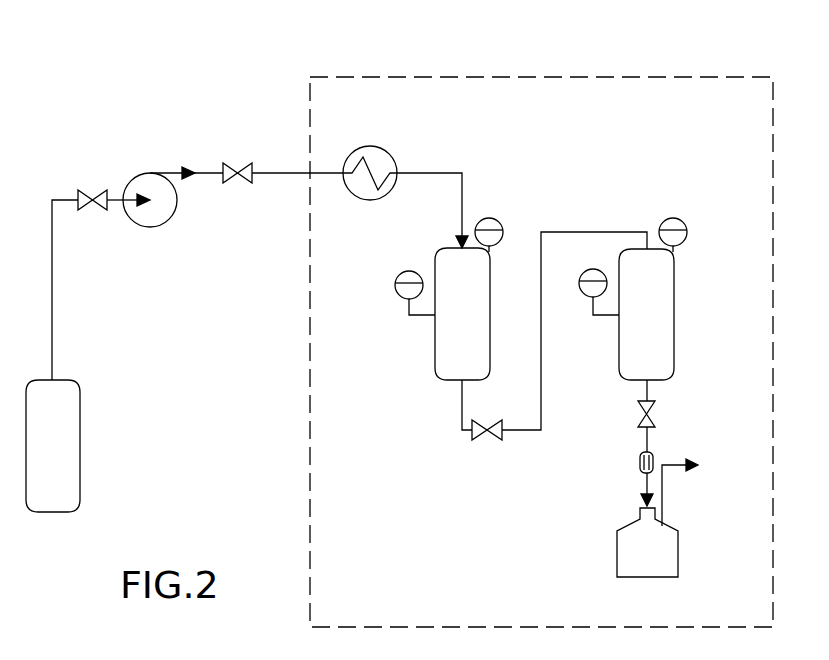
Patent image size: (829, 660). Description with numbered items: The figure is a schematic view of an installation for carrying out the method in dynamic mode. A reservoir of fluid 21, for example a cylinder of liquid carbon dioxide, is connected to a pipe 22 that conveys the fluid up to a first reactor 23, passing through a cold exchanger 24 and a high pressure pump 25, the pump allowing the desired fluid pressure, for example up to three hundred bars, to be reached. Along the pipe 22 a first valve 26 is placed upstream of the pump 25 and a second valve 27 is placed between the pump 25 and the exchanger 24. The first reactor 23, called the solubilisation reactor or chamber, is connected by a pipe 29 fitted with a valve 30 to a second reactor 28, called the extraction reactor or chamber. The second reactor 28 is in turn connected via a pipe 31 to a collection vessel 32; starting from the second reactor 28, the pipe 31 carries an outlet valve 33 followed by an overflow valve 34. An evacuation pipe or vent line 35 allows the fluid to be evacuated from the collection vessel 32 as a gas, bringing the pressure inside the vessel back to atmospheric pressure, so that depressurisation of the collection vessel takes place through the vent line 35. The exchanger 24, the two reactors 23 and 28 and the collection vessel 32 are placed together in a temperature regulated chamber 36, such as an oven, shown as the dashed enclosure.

The reservoir of fluid 21 is at (72, 437).
The pipe 22 is at (438, 173).
The first reactor 23 is at (450, 372).
The cold exchanger 24 is at (386, 151).
The high pressure pump 25 is at (163, 215).
The first valve 26 is at (88, 195).
The second valve 27 is at (237, 170).
The second reactor 28 is at (676, 287).
The pipe 29 is at (519, 432).
The valve 30 is at (482, 440).
The pipe 31 is at (650, 440).
The collection vessel 32 is at (667, 553).
The outlet valve 33 is at (655, 406).
The overflow valve 34 is at (640, 465).
The vent line 35 is at (668, 472).
The temperature regulated chamber 36 is at (707, 77).